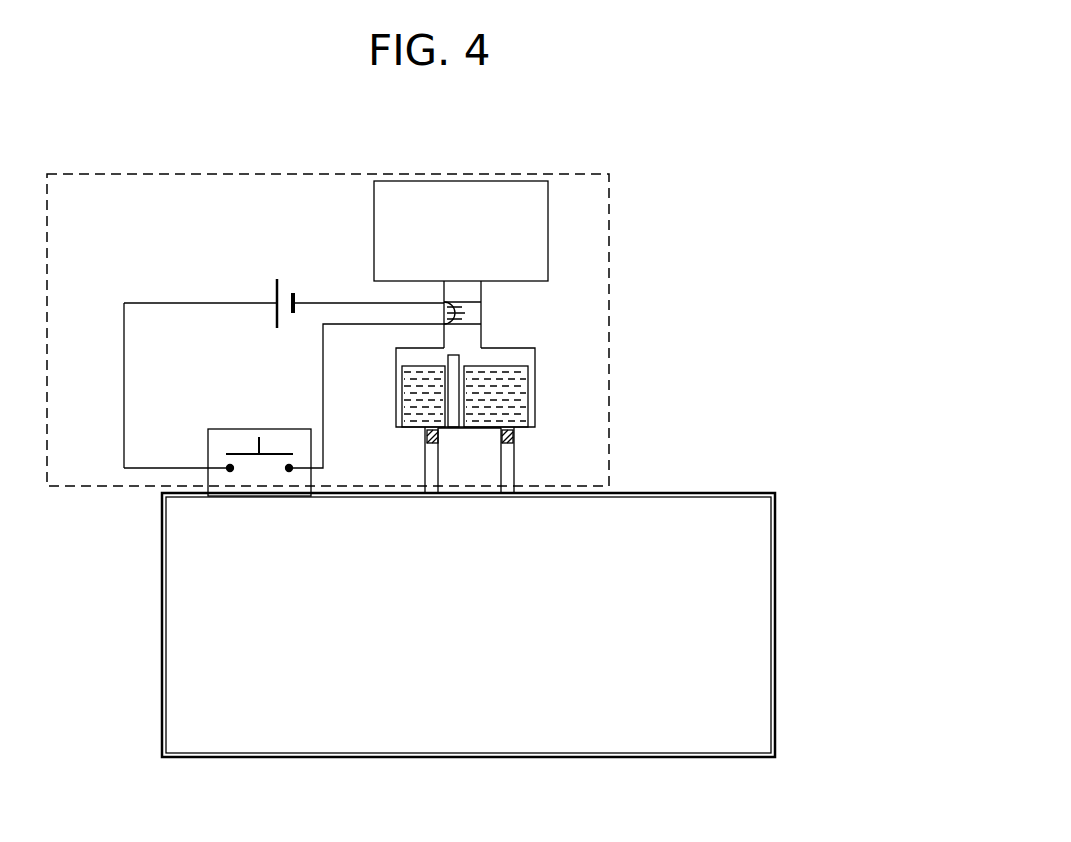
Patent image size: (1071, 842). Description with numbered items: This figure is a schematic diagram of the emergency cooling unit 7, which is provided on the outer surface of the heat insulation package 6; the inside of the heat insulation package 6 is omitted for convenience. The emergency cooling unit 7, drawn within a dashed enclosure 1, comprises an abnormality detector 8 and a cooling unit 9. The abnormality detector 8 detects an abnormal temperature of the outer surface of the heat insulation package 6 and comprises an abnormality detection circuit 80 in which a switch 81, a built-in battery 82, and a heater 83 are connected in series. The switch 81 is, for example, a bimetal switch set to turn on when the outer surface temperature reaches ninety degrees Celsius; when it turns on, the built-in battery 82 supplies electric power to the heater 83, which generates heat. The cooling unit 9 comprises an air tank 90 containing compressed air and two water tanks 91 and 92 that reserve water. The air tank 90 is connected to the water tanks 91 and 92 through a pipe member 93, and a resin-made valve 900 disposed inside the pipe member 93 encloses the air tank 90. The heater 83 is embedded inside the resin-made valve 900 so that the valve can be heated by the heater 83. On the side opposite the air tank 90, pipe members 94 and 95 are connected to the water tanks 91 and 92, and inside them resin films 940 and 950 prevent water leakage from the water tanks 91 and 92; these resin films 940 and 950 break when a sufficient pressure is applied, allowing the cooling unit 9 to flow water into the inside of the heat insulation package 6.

The spray device 1 is at (190, 166).
The heat insulation package 6 is at (717, 492).
The emergency cooling unit 7 is at (636, 215).
The abnormality detector 8 is at (249, 357).
The abnormality detection circuit 80 is at (112, 351).
The switch 81 is at (233, 428).
The built-in battery 82 is at (277, 286).
The heater 83 is at (500, 311).
The cooling unit 9 is at (472, 385).
The air tank 90 is at (548, 220).
The resin-made valve 900 is at (460, 314).
The water tank 91 is at (402, 376).
The water tank 92 is at (528, 376).
The pipe member 93 is at (444, 298).
The pipe member 94 is at (425, 465).
The pipe member 95 is at (514, 463).
The resin film 940 is at (425, 437).
The resin film 950 is at (514, 437).